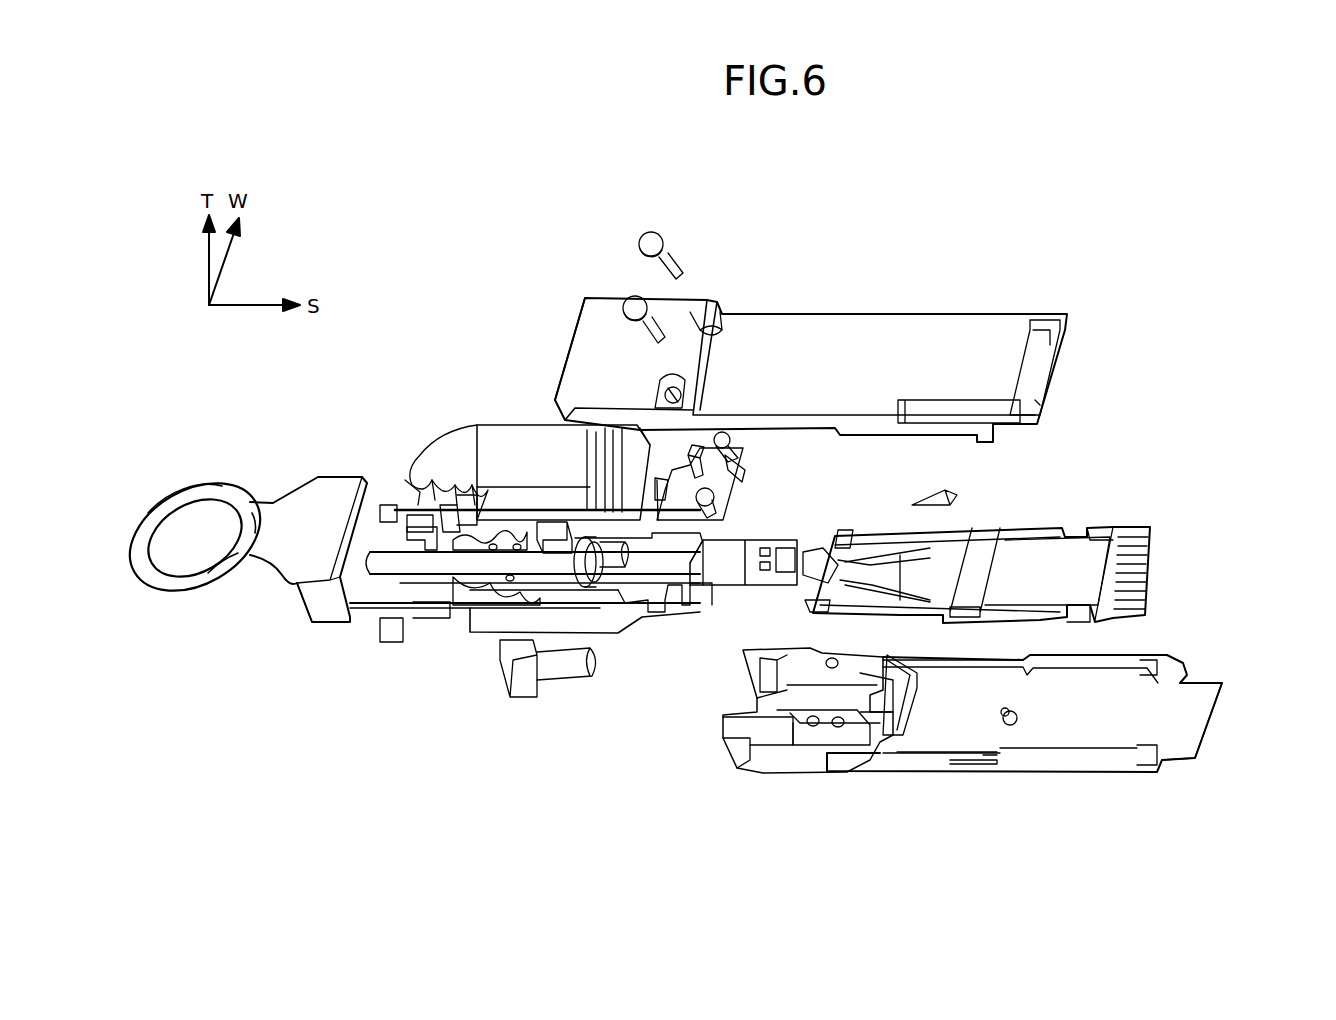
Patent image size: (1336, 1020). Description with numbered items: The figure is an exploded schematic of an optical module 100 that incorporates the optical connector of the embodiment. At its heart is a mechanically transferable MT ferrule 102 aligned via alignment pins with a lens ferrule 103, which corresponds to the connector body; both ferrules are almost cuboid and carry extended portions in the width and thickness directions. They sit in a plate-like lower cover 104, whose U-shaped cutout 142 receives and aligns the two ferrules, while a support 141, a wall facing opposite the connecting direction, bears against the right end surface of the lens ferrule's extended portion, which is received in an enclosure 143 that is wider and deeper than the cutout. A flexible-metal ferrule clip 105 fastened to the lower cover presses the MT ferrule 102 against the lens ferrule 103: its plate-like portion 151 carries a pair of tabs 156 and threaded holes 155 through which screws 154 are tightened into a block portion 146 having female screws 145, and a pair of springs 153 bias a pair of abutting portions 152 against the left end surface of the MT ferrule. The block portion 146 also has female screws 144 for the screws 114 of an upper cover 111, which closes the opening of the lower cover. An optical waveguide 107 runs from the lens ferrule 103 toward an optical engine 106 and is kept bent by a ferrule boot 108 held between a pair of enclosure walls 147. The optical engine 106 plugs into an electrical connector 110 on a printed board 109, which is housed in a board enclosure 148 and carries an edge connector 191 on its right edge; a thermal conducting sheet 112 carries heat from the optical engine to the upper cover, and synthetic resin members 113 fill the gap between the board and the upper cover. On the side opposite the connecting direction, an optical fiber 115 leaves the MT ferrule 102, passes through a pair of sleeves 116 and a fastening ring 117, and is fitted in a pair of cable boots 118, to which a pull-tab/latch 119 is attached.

The optical module 100 is at (845, 285).
The MT ferrule 102 is at (735, 543).
The lens ferrule 103 is at (780, 545).
The lower cover 104 is at (955, 780).
The ferrule clip 105 is at (713, 457).
The optical engine 106 is at (958, 535).
The optical waveguide 107 is at (872, 565).
The ferrule boot 108 is at (825, 553).
The printed board 109 is at (1025, 560).
The electrical connector 110 is at (985, 540).
The upper cover 111 is at (952, 312).
The thermal conducting sheet 112 is at (928, 498).
The synthetic resin members 113 is at (838, 530).
The screws 114 is at (633, 296).
The optical fiber 115 is at (423, 557).
The sleeves 116 is at (560, 667).
The fastening ring 117 is at (595, 580).
The cable boots 118 is at (465, 435).
The pull-tab/latch 119 is at (240, 490).
The support 141 is at (905, 652).
The U-shaped cutout 142 is at (760, 700).
The enclosure 143 is at (870, 700).
The female screws 144 is at (836, 730).
The female screws 145 is at (795, 655).
The block portion 146 is at (790, 735).
The enclosure walls 147 is at (905, 700).
The board enclosure 148 is at (1150, 725).
The plate-like portion 151 is at (717, 492).
The abutting portions 152 is at (662, 500).
The springs 153 is at (587, 458).
The screws 154 is at (722, 432).
The threaded holes 155 is at (737, 470).
The tabs 156 is at (700, 473).
The edge connector 191 is at (1150, 595).